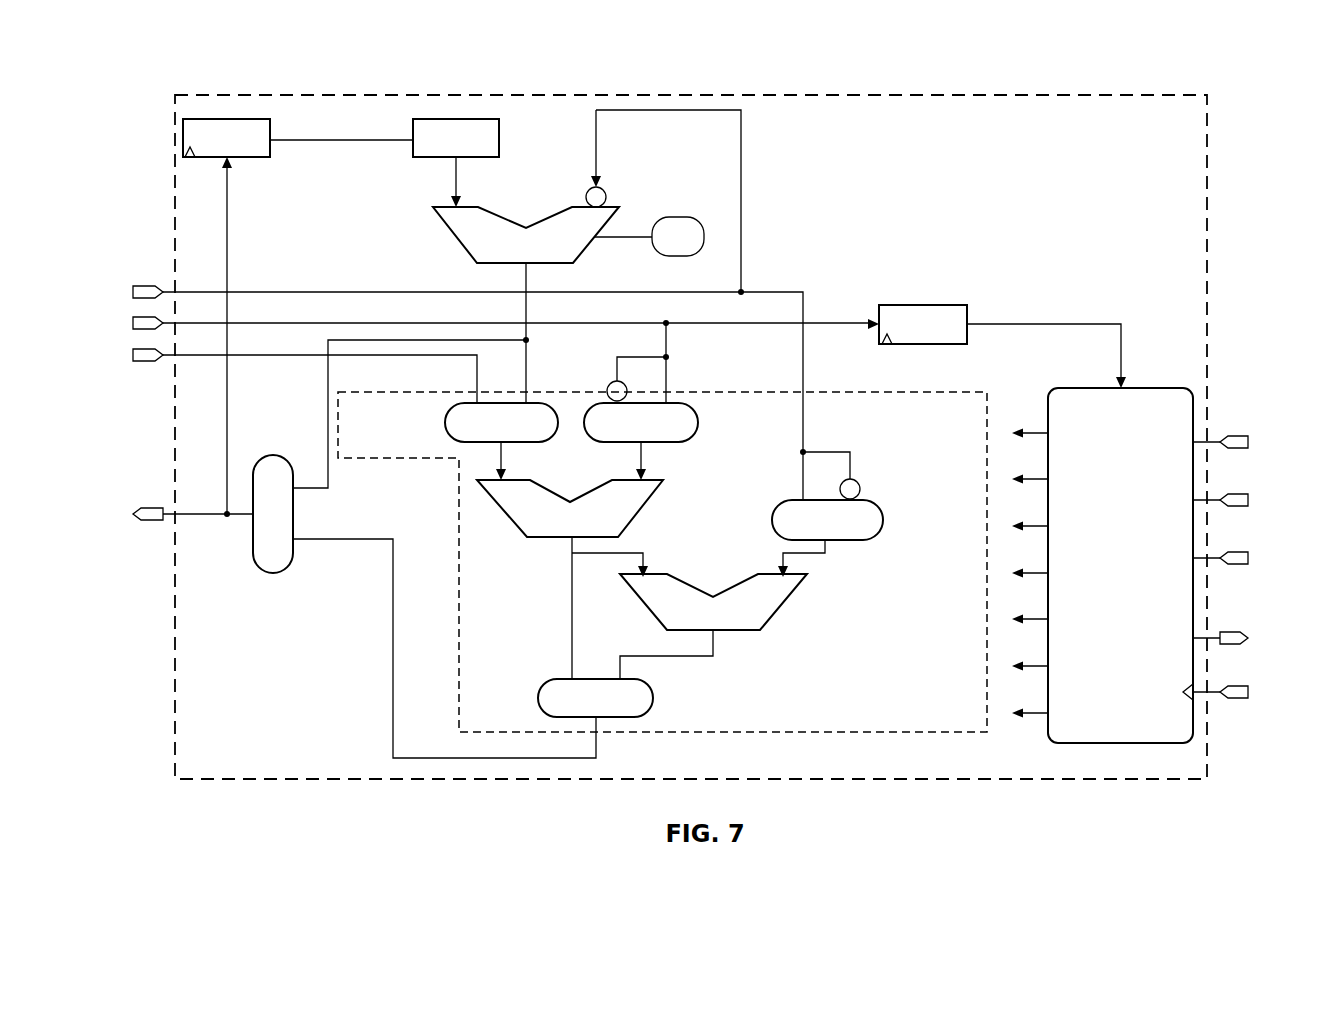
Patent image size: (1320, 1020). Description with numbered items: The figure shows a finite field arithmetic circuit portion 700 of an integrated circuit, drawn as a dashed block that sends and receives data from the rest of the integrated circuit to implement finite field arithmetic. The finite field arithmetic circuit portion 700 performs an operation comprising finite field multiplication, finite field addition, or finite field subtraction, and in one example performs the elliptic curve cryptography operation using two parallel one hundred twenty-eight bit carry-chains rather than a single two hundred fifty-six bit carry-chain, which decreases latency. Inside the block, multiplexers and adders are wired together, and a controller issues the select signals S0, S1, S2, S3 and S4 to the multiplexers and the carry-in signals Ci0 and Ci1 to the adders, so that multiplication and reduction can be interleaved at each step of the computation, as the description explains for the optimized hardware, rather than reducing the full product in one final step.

The finite field arithmetic circuit portion 700 is at (208, 84).
The multiplexer select signal S0 is at (445, 422).
The multiplexer select signal S1 is at (698, 422).
The multiplexer select signal S2 is at (883, 520).
The multiplexer select signal S3 is at (653, 698).
The multiplexer select signal S4 is at (273, 573).
The adder carry-in Ci0 is at (641, 508).
The adder carry-in Ci1 is at (783, 603).